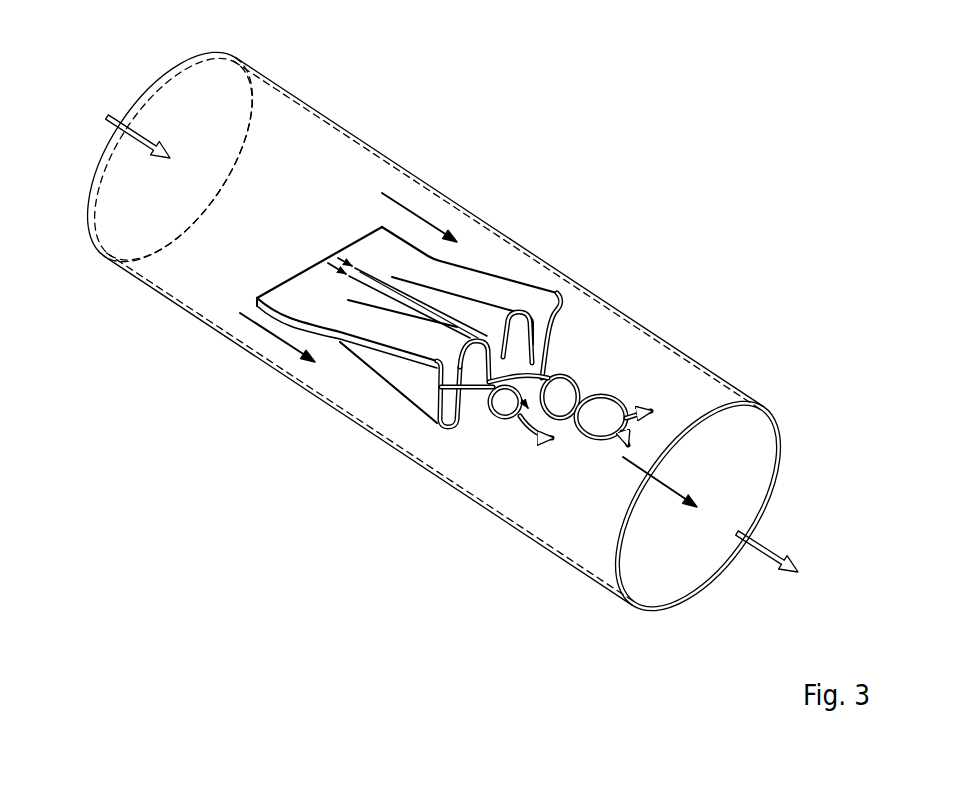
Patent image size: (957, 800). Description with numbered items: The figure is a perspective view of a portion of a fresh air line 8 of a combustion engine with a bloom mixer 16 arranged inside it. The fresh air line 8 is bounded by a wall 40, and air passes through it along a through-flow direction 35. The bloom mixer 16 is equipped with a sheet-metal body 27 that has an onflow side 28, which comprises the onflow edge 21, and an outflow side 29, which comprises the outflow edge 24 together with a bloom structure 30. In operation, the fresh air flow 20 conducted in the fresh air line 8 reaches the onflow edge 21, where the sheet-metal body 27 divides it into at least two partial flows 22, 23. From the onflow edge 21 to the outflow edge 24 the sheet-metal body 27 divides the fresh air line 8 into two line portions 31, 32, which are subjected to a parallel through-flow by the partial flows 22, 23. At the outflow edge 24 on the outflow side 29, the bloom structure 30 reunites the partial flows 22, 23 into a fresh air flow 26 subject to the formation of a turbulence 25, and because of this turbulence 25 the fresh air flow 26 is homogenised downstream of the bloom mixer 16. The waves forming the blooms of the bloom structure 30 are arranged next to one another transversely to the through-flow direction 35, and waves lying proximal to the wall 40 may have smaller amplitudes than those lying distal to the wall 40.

The fresh air line 8 is at (367, 142).
The bloom mixer 16 is at (504, 257).
The fresh air flow 20 is at (106, 117).
The onflow edge 21 is at (317, 252).
The partial flow 22 is at (268, 334).
The partial flow 23 is at (415, 212).
The outflow edge 24 is at (457, 430).
The turbulence 25 is at (586, 380).
The fresh air flow 26 is at (775, 543).
The sheet-metal body 27 is at (532, 282).
The onflow side 28 is at (297, 292).
The outflow side 29 is at (397, 388).
The bloom structure 30 is at (430, 408).
The line portion 31 is at (352, 388).
The line portion 32 is at (478, 240).
The through-flow direction 35 is at (674, 490).
The wall 40 is at (300, 100).